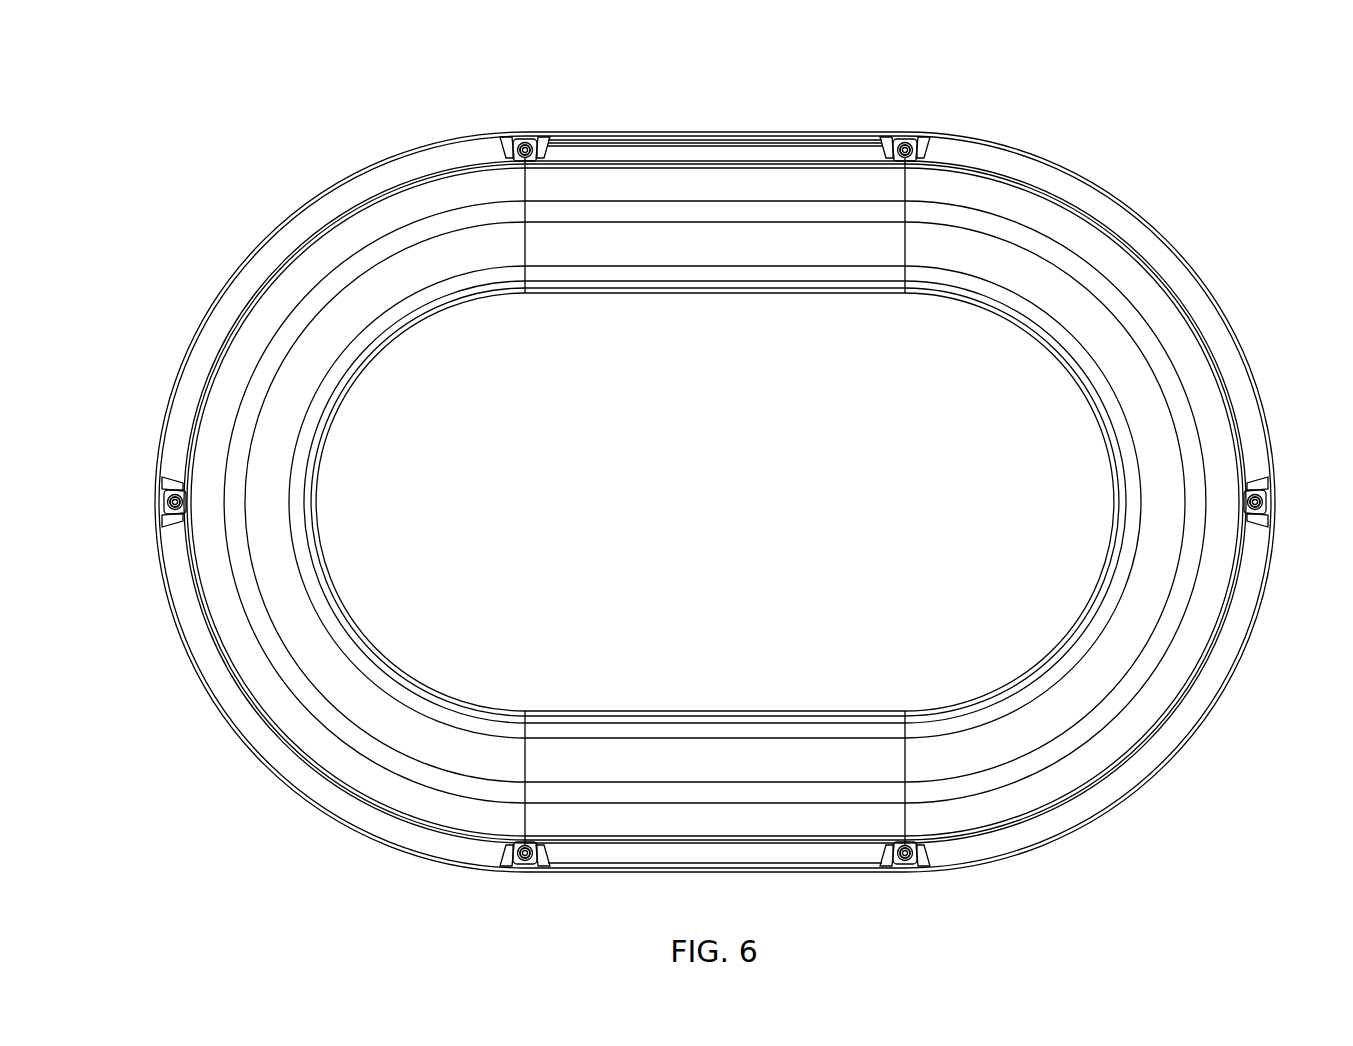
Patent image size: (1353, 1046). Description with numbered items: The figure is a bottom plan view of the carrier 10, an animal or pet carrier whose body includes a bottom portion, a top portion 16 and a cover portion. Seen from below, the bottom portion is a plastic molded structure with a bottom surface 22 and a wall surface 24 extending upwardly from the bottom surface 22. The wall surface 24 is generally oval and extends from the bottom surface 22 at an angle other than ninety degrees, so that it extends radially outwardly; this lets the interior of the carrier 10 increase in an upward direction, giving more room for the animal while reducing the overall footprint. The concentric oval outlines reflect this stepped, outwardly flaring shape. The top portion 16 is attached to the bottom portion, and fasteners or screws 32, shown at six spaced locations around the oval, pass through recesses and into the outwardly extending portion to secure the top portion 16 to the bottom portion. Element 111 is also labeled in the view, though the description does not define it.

The carrier 10 is at (1090, 83).
The top portion 16 is at (362, 168).
The bottom surface 22 is at (212, 593).
The wall surface 24 is at (397, 598).
The fasteners or screws 32 is at (523, 142).
The intermediate ring 111 is at (420, 803).